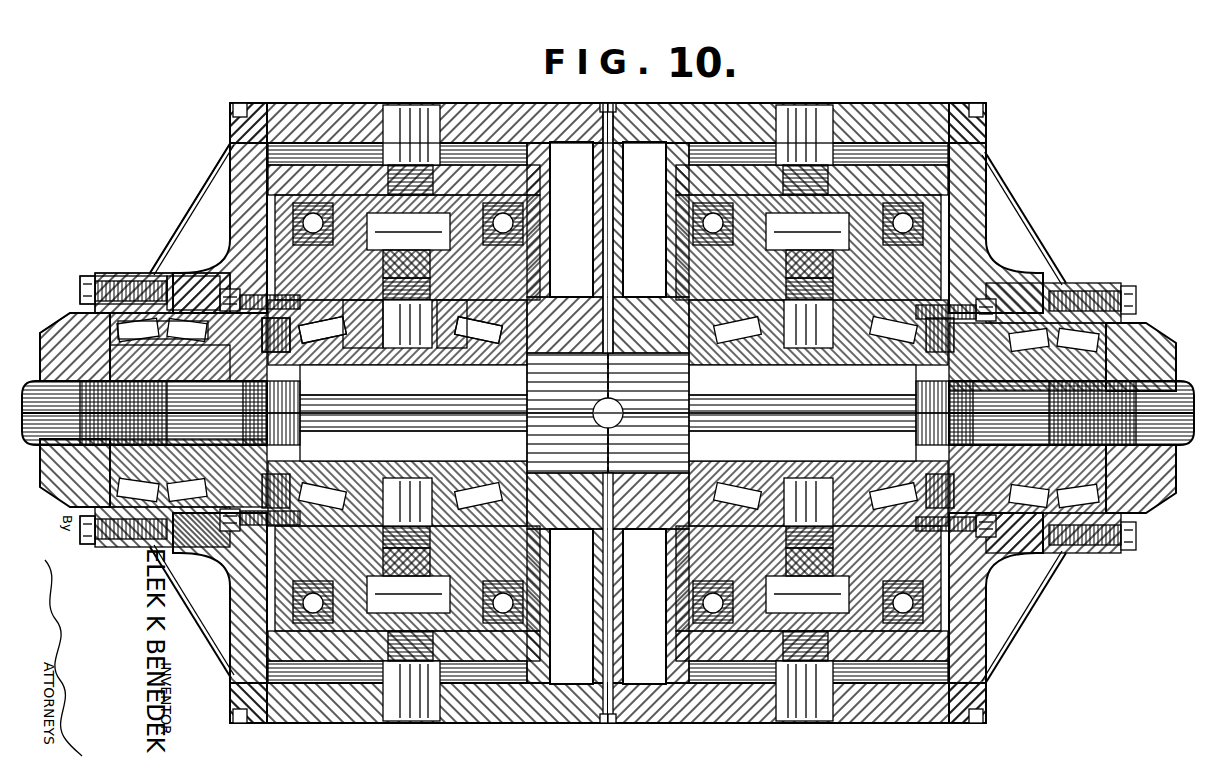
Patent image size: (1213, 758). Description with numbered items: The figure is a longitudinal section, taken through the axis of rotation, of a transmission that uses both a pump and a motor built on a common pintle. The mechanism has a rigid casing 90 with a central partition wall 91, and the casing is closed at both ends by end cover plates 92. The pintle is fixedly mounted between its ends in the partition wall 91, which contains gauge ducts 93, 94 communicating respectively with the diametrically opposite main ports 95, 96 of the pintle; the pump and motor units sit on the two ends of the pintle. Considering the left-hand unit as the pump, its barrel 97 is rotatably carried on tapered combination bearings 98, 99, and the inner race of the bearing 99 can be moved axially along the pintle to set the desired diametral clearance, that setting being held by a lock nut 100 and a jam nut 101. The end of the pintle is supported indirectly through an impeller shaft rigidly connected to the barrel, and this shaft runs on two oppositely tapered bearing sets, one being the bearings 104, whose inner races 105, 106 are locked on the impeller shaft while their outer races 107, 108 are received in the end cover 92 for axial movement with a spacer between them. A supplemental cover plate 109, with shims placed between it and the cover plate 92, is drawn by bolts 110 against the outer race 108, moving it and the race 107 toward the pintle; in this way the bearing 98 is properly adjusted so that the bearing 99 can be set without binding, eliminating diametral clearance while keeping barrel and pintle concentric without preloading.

The rigid casing 90 is at (488, 98).
The central partition wall 91 is at (593, 227).
The end cover plate 92 is at (232, 168).
The gauge duct 93 is at (603, 208).
The gauge duct 94 is at (597, 598).
The main port 95 is at (622, 400).
The main port 96 is at (594, 405).
The barrel 97 is at (452, 352).
The tapered combination bearing 98 is at (486, 352).
The tapered combination bearing 99 is at (372, 352).
The lock nut 100 is at (332, 352).
The jam nut 101 is at (288, 365).
The tapered bearing set 104 is at (73, 513).
The inner race 105 is at (165, 355).
The inner race 106 is at (156, 355).
The outer race 107 is at (146, 298).
The outer race 108 is at (178, 275).
The supplemental cover plate 109 is at (70, 325).
The bolt 110 is at (80, 288).